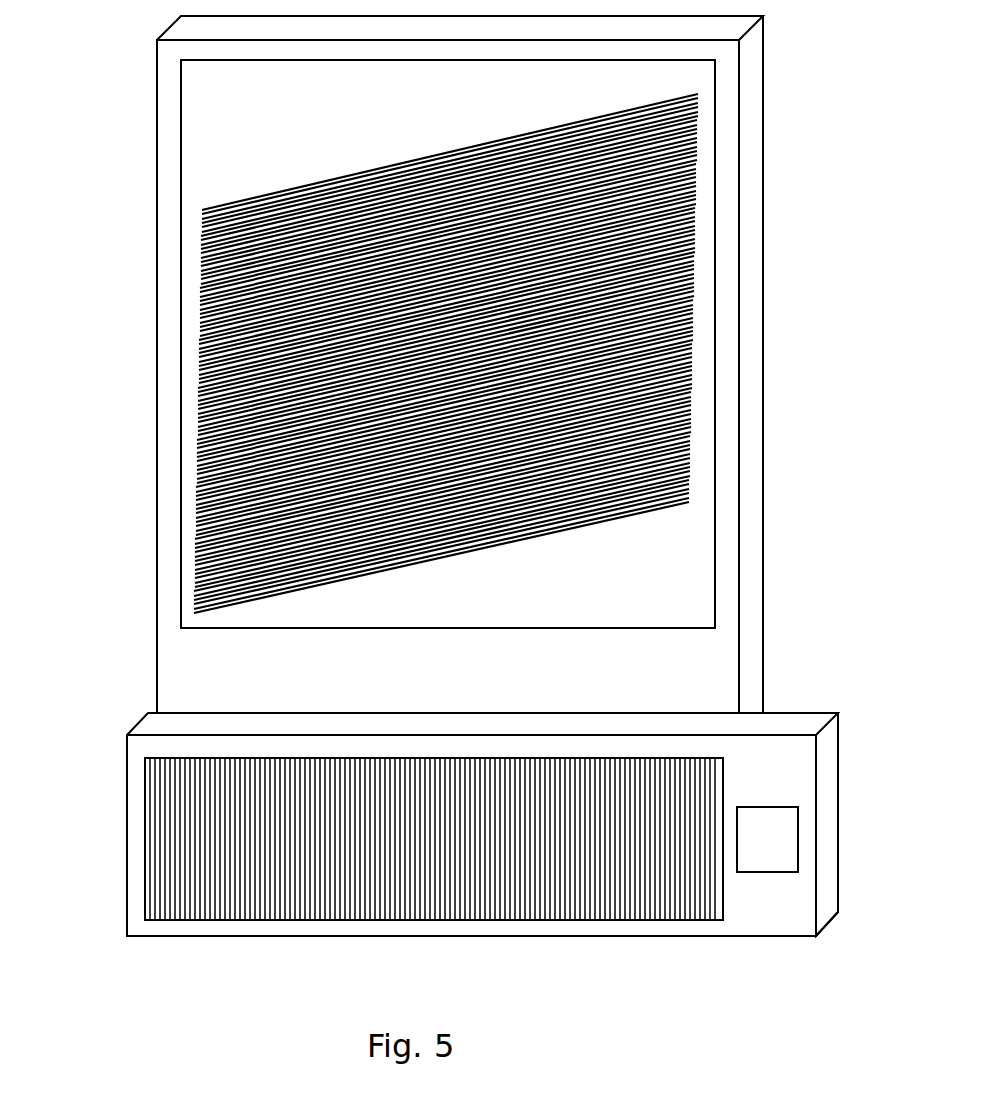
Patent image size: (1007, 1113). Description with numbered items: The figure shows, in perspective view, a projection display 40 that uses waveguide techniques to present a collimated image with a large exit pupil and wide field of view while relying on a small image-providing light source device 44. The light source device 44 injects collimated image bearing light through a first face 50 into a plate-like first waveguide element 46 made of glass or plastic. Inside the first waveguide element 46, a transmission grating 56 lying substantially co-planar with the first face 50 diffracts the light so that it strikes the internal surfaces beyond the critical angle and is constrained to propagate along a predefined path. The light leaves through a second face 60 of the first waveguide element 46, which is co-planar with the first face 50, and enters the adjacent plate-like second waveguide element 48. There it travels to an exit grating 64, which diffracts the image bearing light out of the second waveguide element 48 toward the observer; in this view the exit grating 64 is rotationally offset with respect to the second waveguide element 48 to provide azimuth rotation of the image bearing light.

The projection display 40 is at (466, 527).
The image-providing light source device 44 is at (773, 850).
The first waveguide element 46 is at (772, 780).
The second waveguide element 48 is at (749, 210).
The first face 50 is at (796, 921).
The transmission grating 56 is at (203, 875).
The second face 60 is at (524, 832).
The exit grating 64 is at (678, 400).